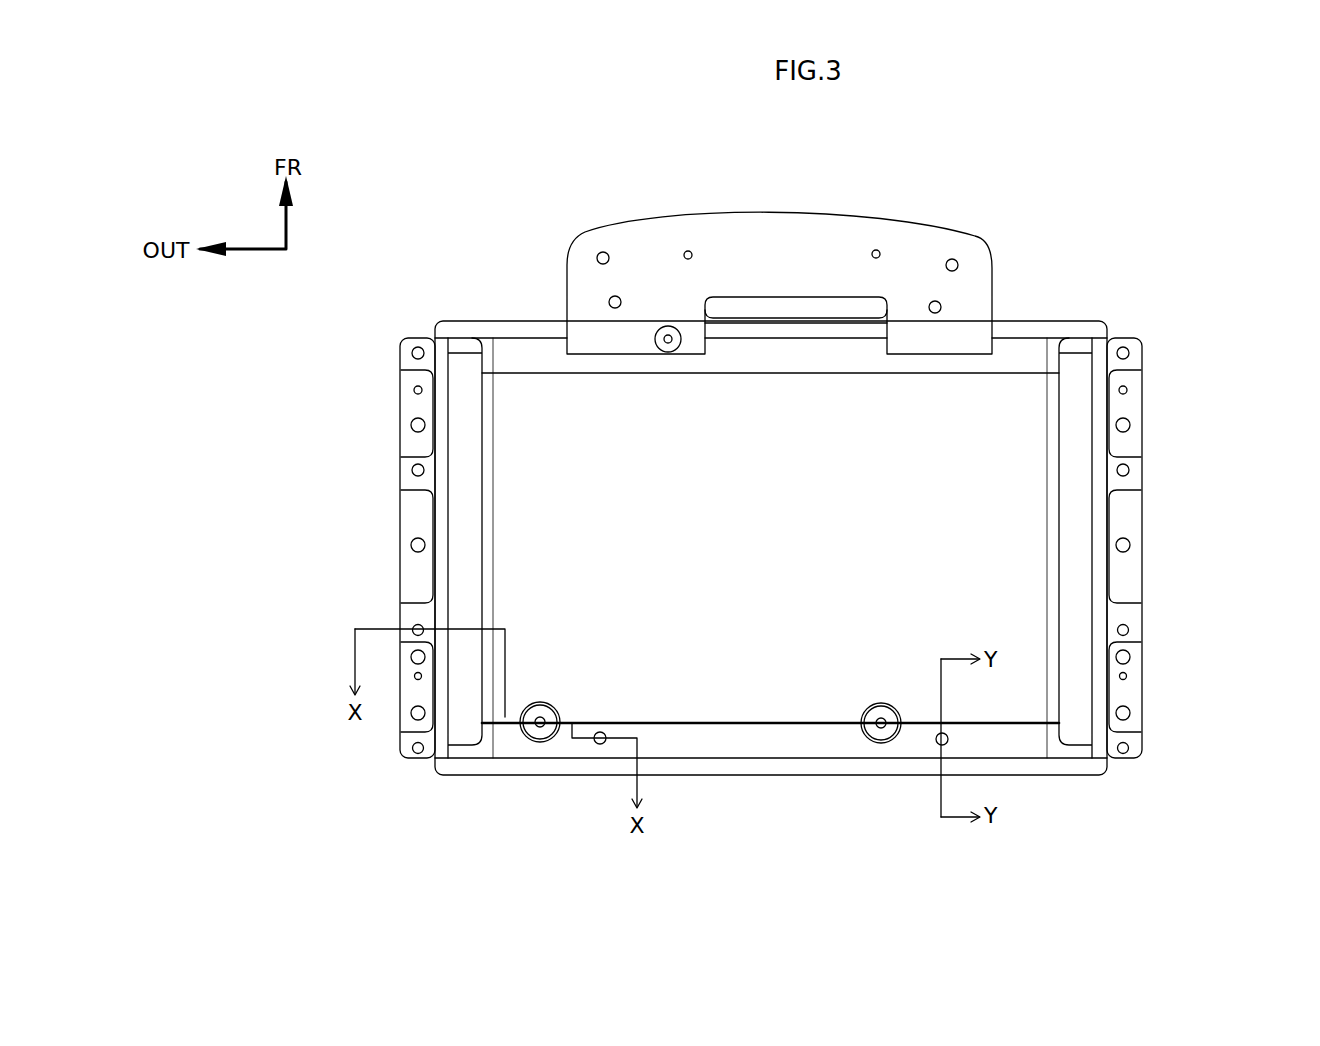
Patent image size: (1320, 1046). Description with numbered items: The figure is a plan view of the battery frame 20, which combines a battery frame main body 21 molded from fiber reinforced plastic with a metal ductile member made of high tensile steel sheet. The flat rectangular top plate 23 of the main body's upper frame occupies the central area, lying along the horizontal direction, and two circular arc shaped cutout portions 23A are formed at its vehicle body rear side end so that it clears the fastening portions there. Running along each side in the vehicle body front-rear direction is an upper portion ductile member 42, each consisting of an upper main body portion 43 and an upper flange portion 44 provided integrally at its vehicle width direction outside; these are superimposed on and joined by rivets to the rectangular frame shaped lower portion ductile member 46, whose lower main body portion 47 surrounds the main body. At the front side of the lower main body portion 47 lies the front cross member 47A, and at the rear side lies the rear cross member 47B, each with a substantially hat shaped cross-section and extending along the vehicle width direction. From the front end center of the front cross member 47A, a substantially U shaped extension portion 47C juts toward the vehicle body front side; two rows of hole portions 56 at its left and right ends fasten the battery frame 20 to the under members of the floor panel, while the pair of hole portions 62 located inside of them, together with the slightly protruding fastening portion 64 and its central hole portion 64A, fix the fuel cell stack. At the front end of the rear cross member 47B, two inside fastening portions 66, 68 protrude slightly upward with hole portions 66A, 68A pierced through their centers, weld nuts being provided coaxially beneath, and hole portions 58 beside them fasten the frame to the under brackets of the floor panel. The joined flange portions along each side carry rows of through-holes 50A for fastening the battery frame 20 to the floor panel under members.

The battery frame 20 is at (1157, 270).
The battery frame main body 21 is at (518, 388).
The top plate 23 is at (987, 460).
The cutout portions 23A is at (558, 740).
The upper portion ductile member 42 is at (398, 546).
The upper main body portion 43 is at (468, 532).
The upper flange portion 44 is at (410, 513).
The lower portion ductile member 46 is at (1041, 318).
The lower main body portion 47 is at (1061, 778).
The front cross member 47A is at (782, 362).
The rear cross member 47B is at (722, 738).
The extension portion 47C is at (781, 240).
The through-holes 50A is at (412, 467).
The hole portions 56 is at (611, 296).
The hole portions 58 is at (600, 744).
The hole portions 62 is at (688, 251).
The fastening portion 64 is at (669, 353).
The hole portion 64A is at (665, 335).
The fastening portion 66 is at (540, 710).
The hole portion 66A is at (537, 740).
The fastening portion 68 is at (881, 710).
The hole portion 68A is at (881, 728).